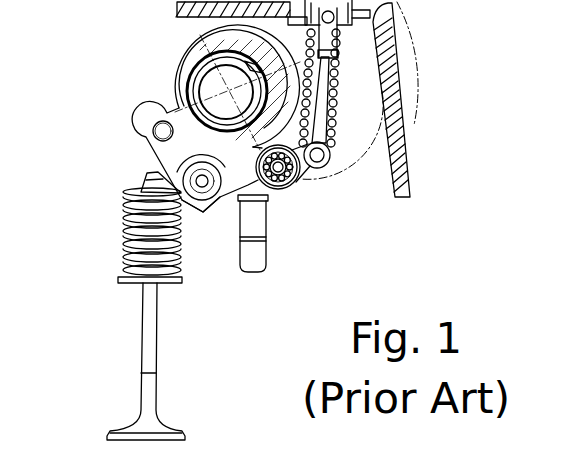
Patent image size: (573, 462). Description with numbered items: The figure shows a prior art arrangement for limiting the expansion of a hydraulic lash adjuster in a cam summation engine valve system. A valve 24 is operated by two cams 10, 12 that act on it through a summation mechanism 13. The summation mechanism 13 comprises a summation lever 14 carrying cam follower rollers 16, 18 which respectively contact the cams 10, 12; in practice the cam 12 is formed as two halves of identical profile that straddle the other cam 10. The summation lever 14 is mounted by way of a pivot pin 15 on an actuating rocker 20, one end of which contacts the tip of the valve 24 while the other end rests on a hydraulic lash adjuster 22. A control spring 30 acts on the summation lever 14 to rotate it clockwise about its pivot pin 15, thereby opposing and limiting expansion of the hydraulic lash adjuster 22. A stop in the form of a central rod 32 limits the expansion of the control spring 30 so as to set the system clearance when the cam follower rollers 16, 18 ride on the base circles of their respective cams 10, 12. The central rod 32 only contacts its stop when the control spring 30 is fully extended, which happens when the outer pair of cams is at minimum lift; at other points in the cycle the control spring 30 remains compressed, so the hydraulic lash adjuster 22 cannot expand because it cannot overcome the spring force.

The cam 10 is at (182, 97).
The cam 12 is at (187, 48).
The summation mechanism 13 is at (97, 177).
The summation lever 14 is at (208, 210).
The pivot pin 15 is at (195, 195).
The cam follower roller 16 is at (290, 180).
The cam follower roller 18 is at (157, 128).
The actuating rocker 20 is at (148, 173).
The hydraulic lash adjuster 22 is at (264, 241).
The valve 24 is at (145, 305).
The control spring 30 is at (340, 85).
The central rod 32 is at (318, 124).